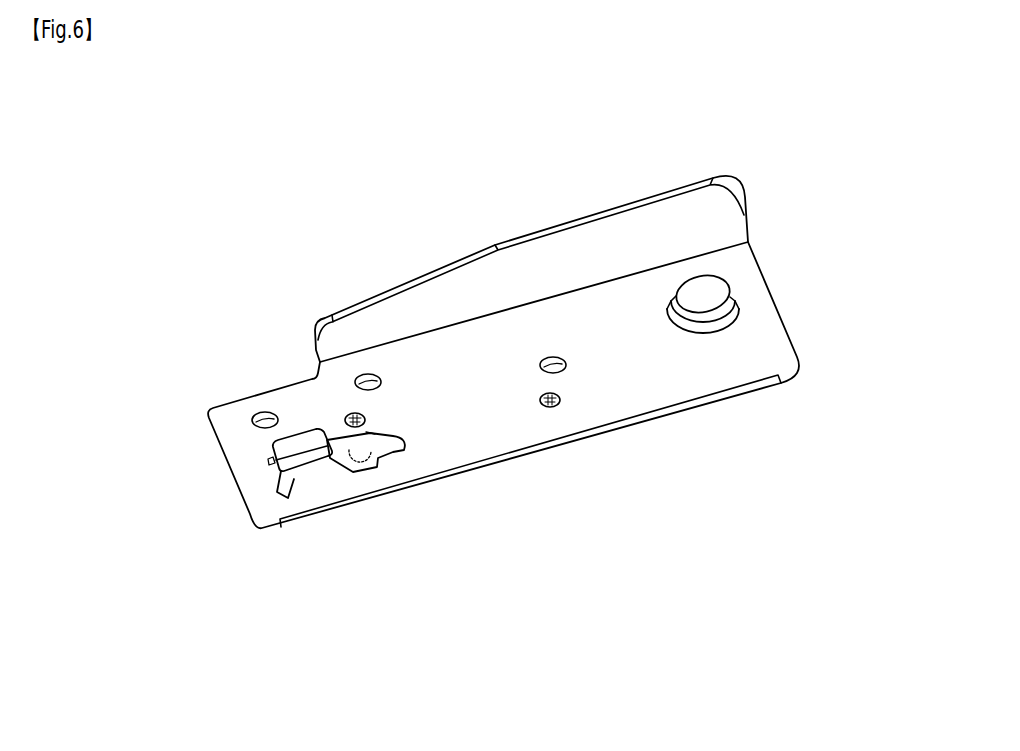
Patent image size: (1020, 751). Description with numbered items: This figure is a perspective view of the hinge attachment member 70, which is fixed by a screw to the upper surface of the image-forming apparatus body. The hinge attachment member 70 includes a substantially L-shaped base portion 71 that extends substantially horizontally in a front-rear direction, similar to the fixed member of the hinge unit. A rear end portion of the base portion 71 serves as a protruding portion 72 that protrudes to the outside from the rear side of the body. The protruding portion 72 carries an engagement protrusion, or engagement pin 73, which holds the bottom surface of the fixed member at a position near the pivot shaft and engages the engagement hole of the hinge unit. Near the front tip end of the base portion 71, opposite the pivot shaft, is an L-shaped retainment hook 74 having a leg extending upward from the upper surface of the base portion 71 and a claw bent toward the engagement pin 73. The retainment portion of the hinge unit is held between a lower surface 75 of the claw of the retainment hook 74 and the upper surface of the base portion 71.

The hinge attachment member 70 is at (265, 258).
The base portion 71 is at (600, 393).
The protruding portion 72 is at (773, 352).
The engagement protrusion 73 is at (707, 288).
The retainment hook 74 is at (252, 457).
The lower surface 75 is at (310, 453).